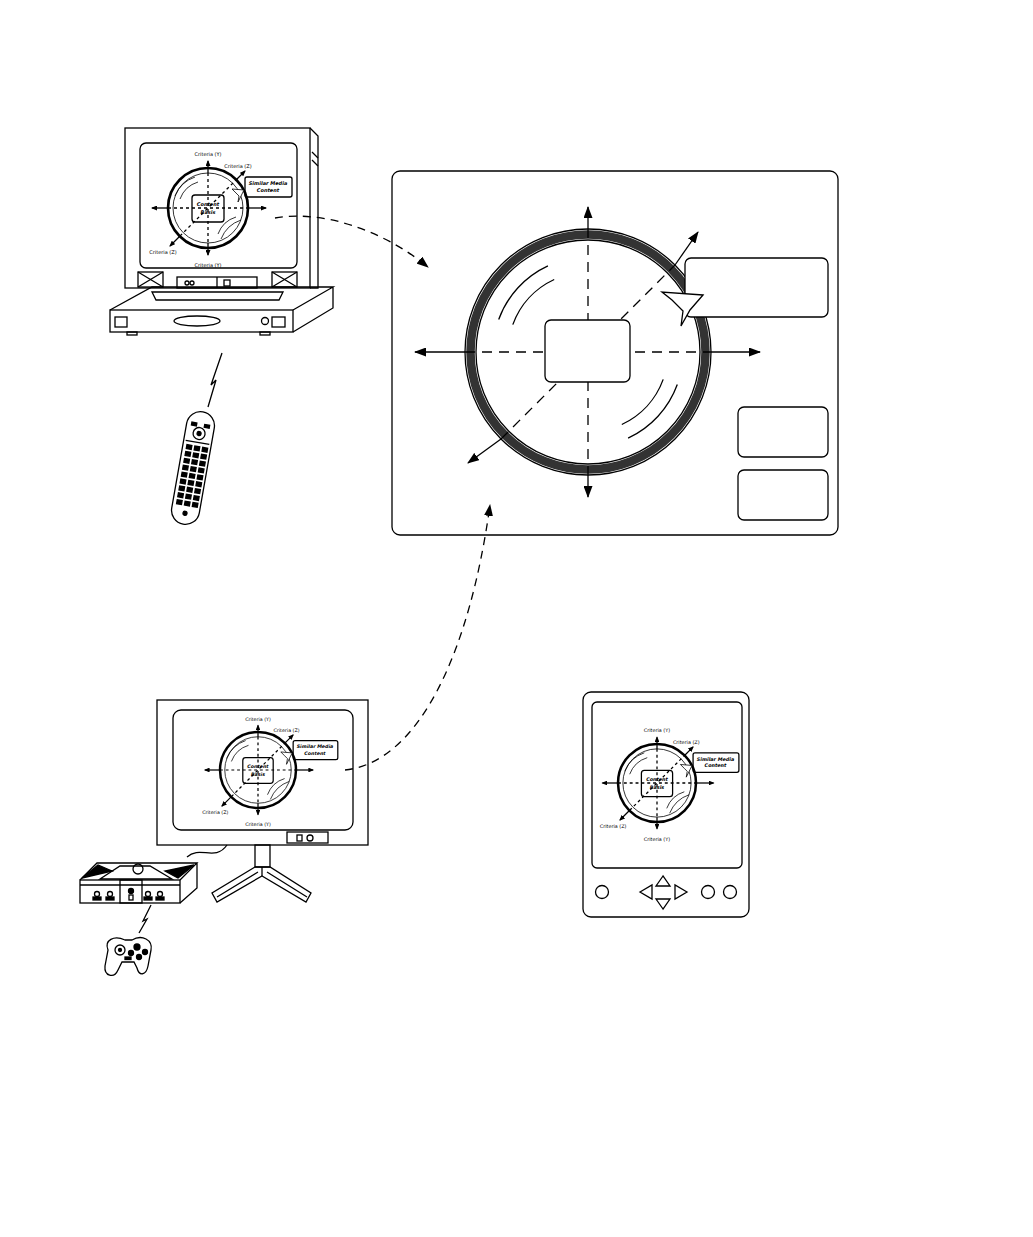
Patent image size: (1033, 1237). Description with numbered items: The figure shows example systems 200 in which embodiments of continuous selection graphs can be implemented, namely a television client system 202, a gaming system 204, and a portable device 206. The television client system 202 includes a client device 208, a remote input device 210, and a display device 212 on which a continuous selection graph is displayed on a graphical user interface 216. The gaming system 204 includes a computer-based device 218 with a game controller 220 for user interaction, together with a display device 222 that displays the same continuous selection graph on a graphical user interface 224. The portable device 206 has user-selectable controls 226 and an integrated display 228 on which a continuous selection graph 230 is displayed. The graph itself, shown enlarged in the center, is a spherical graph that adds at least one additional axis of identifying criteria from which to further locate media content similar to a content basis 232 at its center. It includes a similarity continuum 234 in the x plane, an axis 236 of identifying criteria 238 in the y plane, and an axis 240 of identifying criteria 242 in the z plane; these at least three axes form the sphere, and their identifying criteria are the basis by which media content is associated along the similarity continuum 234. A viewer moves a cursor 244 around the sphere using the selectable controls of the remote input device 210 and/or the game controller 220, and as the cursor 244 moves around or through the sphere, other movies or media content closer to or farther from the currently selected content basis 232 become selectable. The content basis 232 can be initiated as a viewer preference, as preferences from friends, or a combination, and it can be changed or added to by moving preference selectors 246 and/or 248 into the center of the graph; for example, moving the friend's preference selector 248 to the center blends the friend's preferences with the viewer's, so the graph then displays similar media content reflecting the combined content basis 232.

The example systems 200 is at (657, 58).
The television client system 202 is at (200, 82).
The gaming system 204 is at (242, 655).
The portable device 206 is at (633, 653).
The client device 208 is at (190, 333).
The remote input device 210 is at (180, 493).
The display device 212 is at (218, 128).
The graphical user interface 216 is at (183, 145).
The computer-based device 218 is at (173, 903).
The game controller 220 is at (148, 978).
The display device 222 is at (317, 847).
The graphical user interface 224 is at (208, 712).
The user-selectable controls 226 is at (655, 908).
The integrated display 228 is at (690, 702).
The continuous selection graph 230 is at (617, 823).
The content basis 232 is at (545, 365).
The similarity continuum 234 is at (611, 354).
The axis 236 is at (588, 352).
The identifying criteria 238 is at (603, 178).
The axis 240 is at (587, 351).
The identifying criteria 242 is at (710, 206).
The cursor 244 is at (730, 292).
The preference selector 246 is at (760, 432).
The preference selector 248 is at (760, 495).